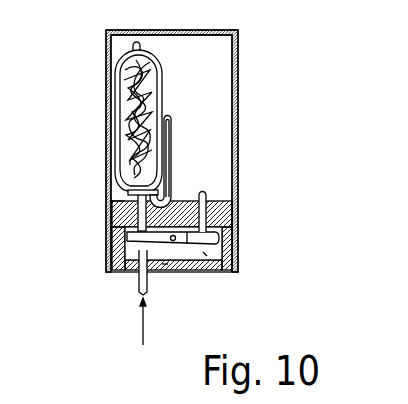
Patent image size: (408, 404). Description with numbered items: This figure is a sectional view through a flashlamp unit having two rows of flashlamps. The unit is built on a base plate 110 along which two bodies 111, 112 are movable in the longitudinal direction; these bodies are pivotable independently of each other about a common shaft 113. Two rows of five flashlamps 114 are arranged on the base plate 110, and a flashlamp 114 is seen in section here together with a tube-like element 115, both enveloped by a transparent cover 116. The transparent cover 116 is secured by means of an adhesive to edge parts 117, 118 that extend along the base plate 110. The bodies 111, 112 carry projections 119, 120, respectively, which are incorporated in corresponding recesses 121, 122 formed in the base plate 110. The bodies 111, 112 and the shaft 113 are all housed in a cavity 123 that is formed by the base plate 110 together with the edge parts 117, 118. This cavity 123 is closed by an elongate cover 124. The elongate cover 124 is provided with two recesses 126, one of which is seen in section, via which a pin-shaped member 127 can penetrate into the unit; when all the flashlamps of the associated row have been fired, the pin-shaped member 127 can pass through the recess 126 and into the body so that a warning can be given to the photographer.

The base plate 110 is at (226, 208).
The body 111 is at (128, 233).
The body 112 is at (220, 237).
The common shaft 113 is at (174, 241).
The flashlamp 114 is at (133, 113).
The tube 115 is at (173, 132).
The transparent cover 116 is at (236, 62).
The edge part 117 is at (112, 250).
The edge part 118 is at (226, 268).
The projection 119 is at (138, 213).
The projection 120 is at (208, 193).
The recess 121 is at (112, 204).
The recess 122 is at (236, 215).
The cavity 123 is at (205, 254).
The elongate cover 124 is at (165, 268).
The recess 126 is at (138, 278).
The pin-shaped member 127 is at (140, 294).